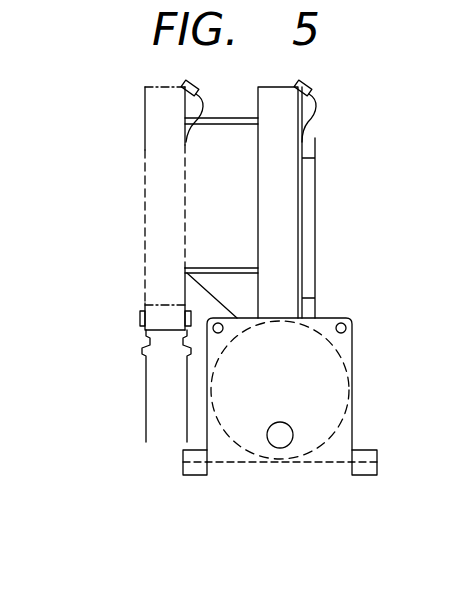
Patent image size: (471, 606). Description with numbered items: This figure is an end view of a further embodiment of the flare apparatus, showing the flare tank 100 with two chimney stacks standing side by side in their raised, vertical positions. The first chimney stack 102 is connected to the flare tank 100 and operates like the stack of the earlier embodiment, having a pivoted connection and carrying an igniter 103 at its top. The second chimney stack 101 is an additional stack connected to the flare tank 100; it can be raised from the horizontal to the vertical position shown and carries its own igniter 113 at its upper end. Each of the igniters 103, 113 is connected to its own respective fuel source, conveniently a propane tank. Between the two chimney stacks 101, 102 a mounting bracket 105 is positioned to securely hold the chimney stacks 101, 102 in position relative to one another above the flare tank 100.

The flare tank 100 is at (352, 278).
The second chimney stack 101 is at (143, 133).
The first chimney stack 102 is at (307, 103).
The igniter 103 is at (308, 85).
The mounting bracket 105 is at (215, 210).
The igniter 113 is at (194, 83).